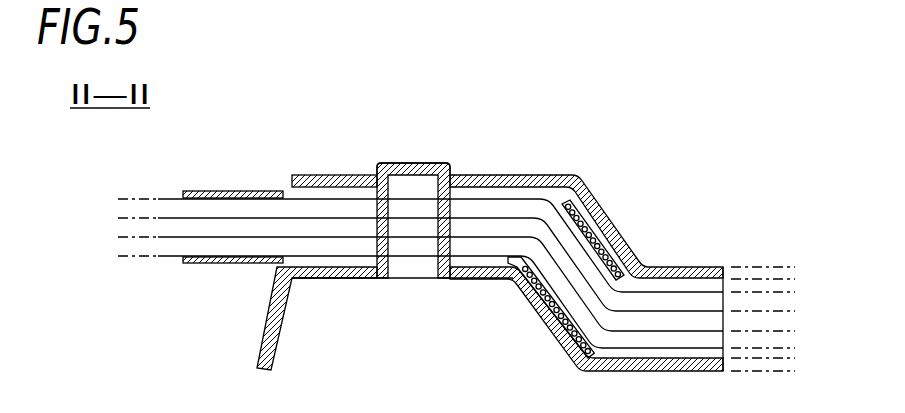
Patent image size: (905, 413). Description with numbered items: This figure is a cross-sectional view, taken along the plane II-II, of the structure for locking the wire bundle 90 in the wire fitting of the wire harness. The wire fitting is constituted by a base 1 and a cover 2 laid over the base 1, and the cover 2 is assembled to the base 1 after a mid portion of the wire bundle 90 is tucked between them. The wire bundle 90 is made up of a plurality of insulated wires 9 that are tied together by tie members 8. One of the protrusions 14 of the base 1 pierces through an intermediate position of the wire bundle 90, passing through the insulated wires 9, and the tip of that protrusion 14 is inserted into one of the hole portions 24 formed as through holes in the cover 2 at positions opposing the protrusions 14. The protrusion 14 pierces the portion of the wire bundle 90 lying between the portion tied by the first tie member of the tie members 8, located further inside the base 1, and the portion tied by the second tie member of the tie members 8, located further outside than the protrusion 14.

The base 1 is at (236, 318).
The cover 2 is at (575, 174).
The tie members 8 is at (222, 191).
The insulated wires 9 is at (673, 330).
The protrusions 14 is at (429, 190).
The hole portions 24 is at (385, 163).
The wire bundle 90 is at (707, 281).